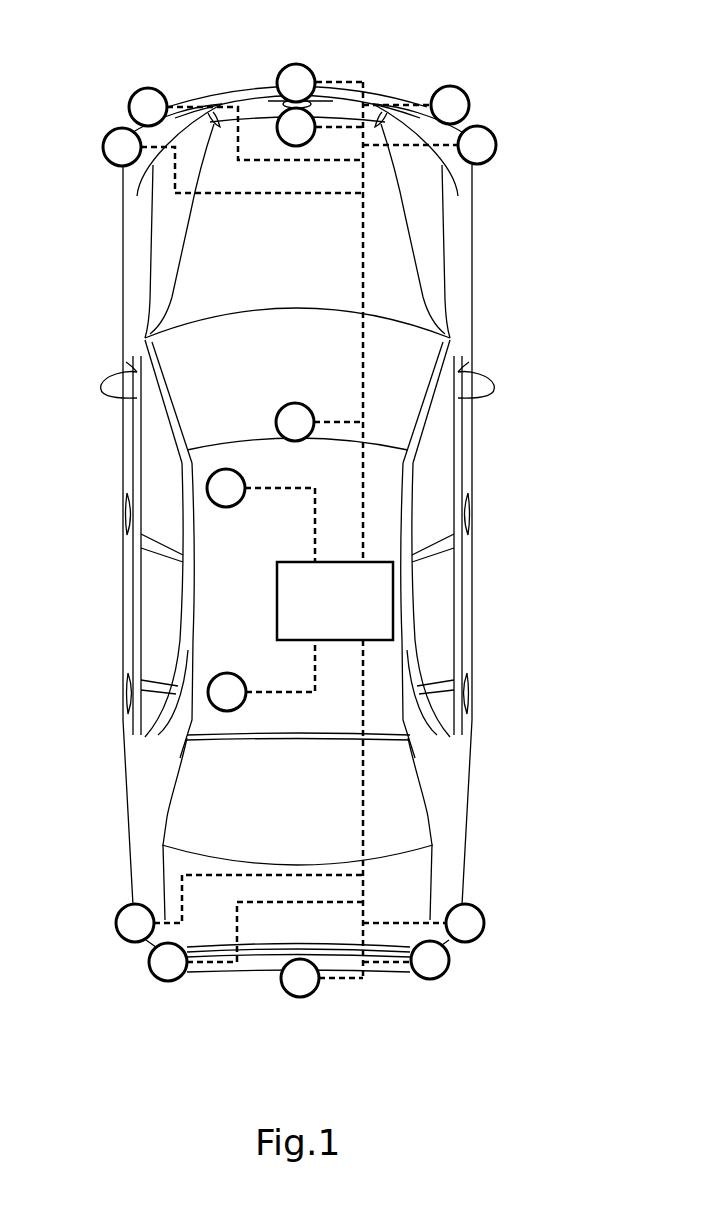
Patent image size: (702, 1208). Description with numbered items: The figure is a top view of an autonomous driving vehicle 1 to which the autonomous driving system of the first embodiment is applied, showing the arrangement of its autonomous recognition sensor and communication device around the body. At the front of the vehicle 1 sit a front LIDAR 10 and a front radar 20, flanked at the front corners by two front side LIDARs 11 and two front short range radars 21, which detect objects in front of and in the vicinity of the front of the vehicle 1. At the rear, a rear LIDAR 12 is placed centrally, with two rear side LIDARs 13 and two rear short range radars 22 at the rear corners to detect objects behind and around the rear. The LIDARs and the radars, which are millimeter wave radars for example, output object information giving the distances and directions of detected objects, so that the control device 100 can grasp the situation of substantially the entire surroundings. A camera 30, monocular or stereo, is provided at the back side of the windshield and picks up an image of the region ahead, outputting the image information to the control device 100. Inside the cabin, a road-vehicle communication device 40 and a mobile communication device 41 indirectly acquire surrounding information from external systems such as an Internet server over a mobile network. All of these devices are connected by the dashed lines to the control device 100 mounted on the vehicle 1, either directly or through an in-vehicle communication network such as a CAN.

The vehicle 1 is at (298, 530).
The front LIDAR 10 is at (311, 68).
The front side LIDAR 11 is at (143, 89).
The rear LIDAR 12 is at (308, 995).
The rear side LIDAR 13 is at (160, 980).
The front radar 20 is at (283, 111).
The front short range radar 21 is at (115, 129).
The rear short range radar 22 is at (117, 926).
The camera 30 is at (277, 416).
The road-vehicle communication device 40 is at (209, 482).
The mobile communication device 41 is at (212, 680).
The control device 100 is at (393, 600).